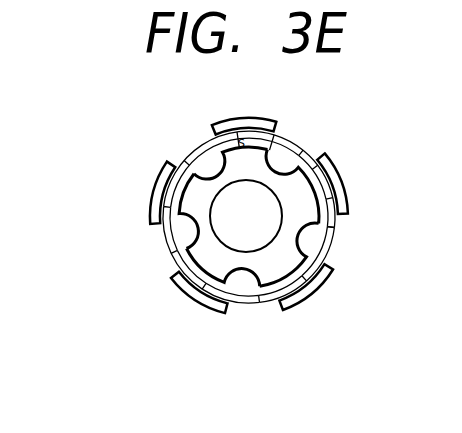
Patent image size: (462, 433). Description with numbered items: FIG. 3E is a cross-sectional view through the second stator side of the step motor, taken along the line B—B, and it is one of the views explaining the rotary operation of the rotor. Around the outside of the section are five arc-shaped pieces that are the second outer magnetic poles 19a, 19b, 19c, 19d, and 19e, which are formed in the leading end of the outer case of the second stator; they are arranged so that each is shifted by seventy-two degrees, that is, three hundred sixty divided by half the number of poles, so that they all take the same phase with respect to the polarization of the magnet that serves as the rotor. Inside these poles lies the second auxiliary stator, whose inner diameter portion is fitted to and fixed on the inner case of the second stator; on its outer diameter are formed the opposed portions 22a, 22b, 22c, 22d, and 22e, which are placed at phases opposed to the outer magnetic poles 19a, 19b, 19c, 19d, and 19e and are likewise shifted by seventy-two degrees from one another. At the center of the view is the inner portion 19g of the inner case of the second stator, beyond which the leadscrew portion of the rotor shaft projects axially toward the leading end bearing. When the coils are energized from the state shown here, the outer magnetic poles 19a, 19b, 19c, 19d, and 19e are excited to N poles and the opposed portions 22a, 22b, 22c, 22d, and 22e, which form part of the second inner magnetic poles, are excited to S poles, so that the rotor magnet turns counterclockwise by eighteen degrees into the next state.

The second outer magnetic pole 19a is at (251, 118).
The second outer magnetic pole 19b is at (157, 180).
The second outer magnetic pole 19c is at (181, 291).
The second outer magnetic pole 19d is at (314, 276).
The second outer magnetic pole 19e is at (337, 185).
The inner portion of inner case 19g is at (237, 210).
The opposed portion 22a is at (270, 142).
The opposed portion 22b is at (164, 233).
The opposed portion 22c is at (224, 297).
The opposed portion 22d is at (322, 253).
The opposed portion 22e is at (317, 206).